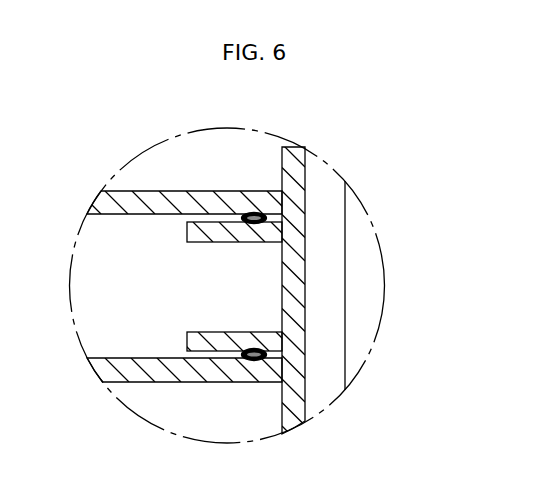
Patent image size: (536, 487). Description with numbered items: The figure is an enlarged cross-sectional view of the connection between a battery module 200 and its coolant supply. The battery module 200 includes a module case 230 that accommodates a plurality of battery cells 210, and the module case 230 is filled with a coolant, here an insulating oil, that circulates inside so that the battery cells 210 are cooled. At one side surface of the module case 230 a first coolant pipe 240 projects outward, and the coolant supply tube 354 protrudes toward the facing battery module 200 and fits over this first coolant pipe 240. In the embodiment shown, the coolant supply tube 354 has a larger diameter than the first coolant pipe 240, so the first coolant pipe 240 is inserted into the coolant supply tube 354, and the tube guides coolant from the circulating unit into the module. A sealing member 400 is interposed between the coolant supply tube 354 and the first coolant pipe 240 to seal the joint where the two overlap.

The battery module 200 is at (340, 161).
The battery cell 210 is at (370, 232).
The module case 230 is at (296, 150).
The first coolant pipe 240 is at (212, 226).
The coolant supply tube 354 is at (131, 200).
The sealing member 400 is at (257, 211).